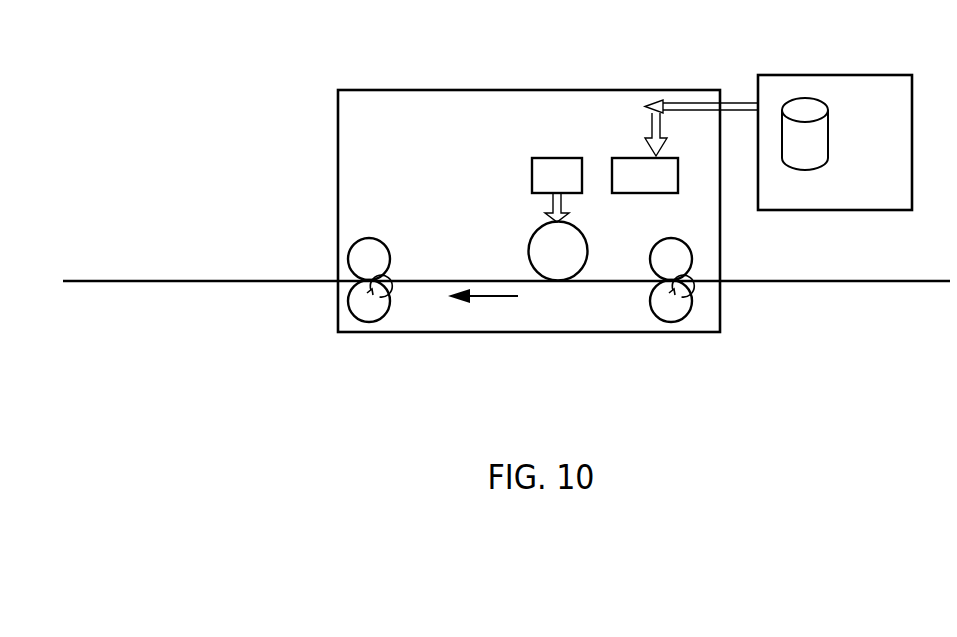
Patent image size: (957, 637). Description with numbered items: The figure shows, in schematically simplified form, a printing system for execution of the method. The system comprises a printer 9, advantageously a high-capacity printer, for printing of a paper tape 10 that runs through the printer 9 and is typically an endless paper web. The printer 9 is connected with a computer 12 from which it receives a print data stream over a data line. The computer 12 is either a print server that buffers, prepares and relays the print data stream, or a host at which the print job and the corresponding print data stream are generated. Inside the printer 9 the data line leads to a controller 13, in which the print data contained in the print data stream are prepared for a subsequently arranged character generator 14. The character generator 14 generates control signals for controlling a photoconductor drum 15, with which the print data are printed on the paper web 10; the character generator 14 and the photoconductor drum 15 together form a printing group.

The printer 9 is at (559, 78).
The paper tape 10 is at (254, 283).
The computer 12 is at (737, 103).
The controller 13 is at (636, 186).
The character generator 14 is at (548, 186).
The photoconductor drum 15 is at (549, 260).